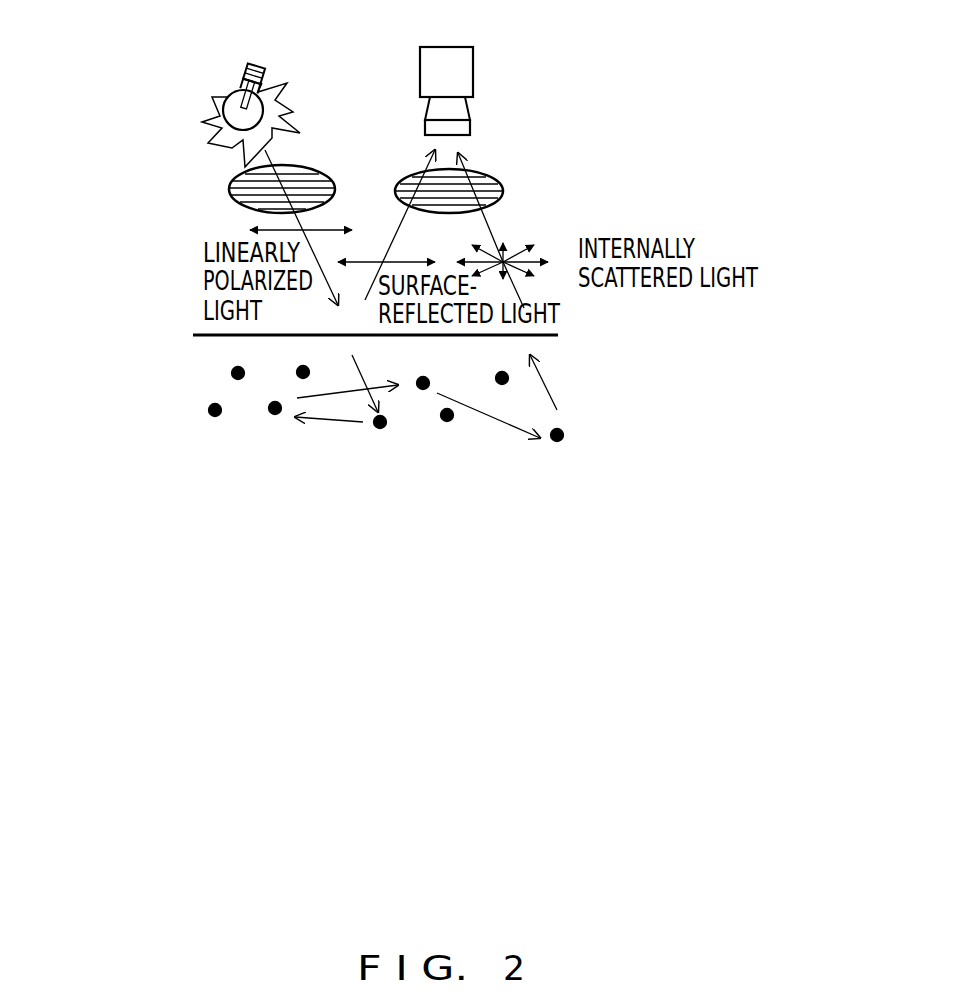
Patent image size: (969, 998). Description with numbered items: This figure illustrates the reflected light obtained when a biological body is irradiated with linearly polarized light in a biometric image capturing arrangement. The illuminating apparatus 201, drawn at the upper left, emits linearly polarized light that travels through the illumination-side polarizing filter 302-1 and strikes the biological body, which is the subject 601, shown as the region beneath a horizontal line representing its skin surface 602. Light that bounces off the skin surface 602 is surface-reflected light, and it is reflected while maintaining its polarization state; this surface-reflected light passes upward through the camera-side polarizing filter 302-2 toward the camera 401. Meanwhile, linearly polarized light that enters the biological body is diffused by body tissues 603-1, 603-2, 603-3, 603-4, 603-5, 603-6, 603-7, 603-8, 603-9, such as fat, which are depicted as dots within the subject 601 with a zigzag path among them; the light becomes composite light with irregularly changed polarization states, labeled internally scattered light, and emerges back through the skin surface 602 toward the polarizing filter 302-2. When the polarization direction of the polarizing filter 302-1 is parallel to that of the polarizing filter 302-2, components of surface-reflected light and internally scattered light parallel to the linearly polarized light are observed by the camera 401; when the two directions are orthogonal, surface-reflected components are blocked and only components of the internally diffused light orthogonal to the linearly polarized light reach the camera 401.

The illuminating apparatus 201 is at (240, 66).
The camera 401 is at (474, 60).
The polarizing filter 302-1 is at (318, 167).
The polarizing filter 302-2 is at (488, 172).
The subject 601 is at (597, 342).
The skin surface 602 is at (545, 336).
The body tissue 603-1 is at (207, 408).
The body tissue 603-2 is at (230, 372).
The body tissue 603-3 is at (297, 373).
The body tissue 603-4 is at (270, 415).
The body tissue 603-5 is at (452, 370).
The body tissue 603-6 is at (379, 430).
The body tissue 603-7 is at (448, 423).
The body tissue 603-8 is at (530, 396).
The body tissue 603-9 is at (560, 442).